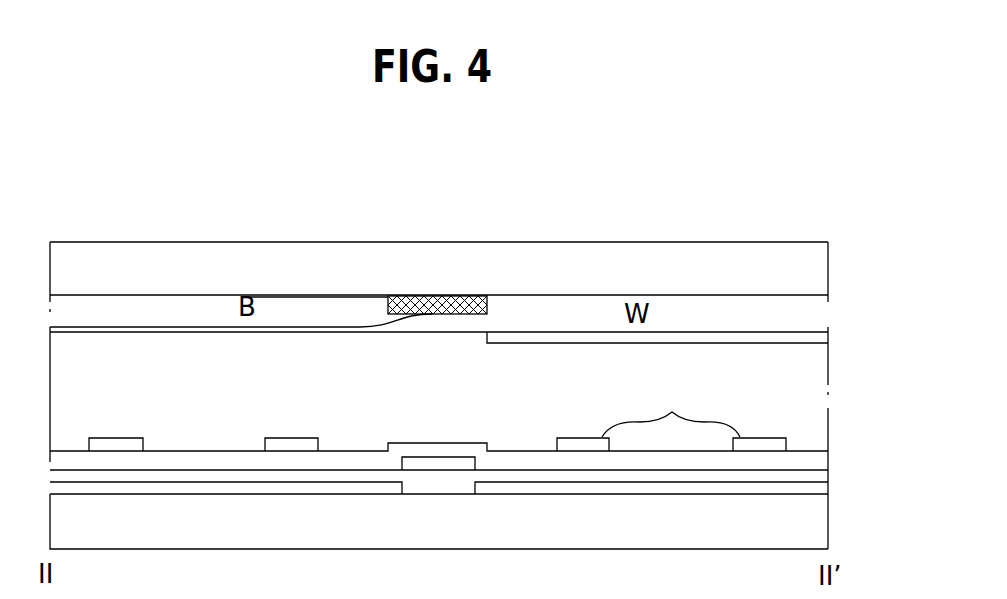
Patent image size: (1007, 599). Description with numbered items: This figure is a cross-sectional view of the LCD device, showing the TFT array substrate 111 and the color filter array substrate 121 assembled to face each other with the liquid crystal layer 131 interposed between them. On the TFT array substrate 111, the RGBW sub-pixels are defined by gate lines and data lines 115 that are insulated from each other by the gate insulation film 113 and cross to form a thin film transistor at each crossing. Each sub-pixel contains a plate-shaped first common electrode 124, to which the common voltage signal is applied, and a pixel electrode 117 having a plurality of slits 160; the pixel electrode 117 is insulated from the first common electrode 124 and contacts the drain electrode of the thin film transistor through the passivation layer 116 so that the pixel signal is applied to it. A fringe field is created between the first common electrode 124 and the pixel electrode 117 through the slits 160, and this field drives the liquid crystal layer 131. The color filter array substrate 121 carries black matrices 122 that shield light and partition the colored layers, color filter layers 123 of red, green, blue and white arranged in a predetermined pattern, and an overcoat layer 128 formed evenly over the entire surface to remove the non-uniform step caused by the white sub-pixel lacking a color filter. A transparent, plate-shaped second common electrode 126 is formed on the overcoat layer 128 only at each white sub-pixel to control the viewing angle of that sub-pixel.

The TFT array substrate 111 is at (817, 530).
The first common electrode 124 is at (817, 492).
The gate insulation film 113 is at (817, 477).
The data line 115 is at (430, 463).
The passivation layer 116 is at (815, 460).
The pixel electrode 117 is at (777, 438).
The slits 160 is at (671, 408).
The liquid crystal layer 131 is at (818, 378).
The second common electrode 126 is at (818, 340).
The overcoat layer 128 is at (818, 313).
The black matrix 122 is at (453, 292).
The color filter layer 123 is at (333, 305).
The color filter array substrate 121 is at (818, 263).